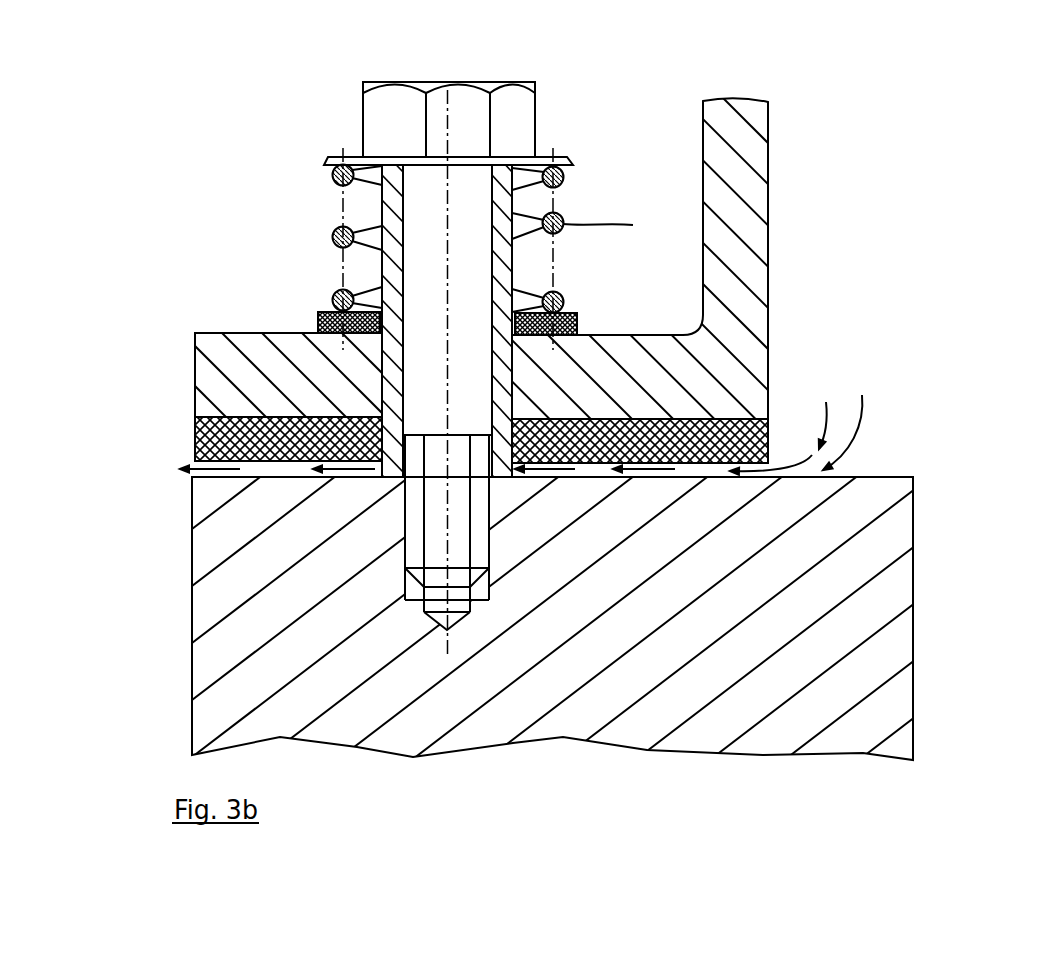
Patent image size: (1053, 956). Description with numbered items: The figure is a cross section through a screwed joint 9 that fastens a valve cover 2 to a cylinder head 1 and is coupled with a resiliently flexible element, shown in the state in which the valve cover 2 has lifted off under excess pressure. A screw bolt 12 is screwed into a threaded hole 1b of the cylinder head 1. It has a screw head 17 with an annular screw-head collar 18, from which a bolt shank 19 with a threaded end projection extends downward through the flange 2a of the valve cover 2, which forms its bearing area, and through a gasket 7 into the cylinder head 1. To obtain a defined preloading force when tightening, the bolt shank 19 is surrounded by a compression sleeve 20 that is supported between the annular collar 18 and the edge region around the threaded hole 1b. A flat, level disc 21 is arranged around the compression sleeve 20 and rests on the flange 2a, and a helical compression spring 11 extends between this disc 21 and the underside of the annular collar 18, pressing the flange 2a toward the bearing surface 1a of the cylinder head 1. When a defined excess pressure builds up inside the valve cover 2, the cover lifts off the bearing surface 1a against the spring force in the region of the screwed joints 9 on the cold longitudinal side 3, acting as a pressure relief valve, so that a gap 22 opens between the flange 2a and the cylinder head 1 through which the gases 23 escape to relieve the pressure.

The cylinder head 1 is at (906, 599).
The bearing surface 1a is at (871, 471).
The threaded hole 1b is at (488, 582).
The valve cover 2 is at (758, 283).
The flange 2a is at (266, 331).
The cold longitudinal side 3 is at (164, 543).
The gasket 7 is at (195, 443).
The screwed joint 9 is at (622, 155).
The helical compression spring 11 is at (337, 245).
The screw bolt 12 is at (543, 140).
The screw head 17 is at (363, 109).
The annular screw-head collar 18 is at (333, 160).
The bolt shank 19 is at (465, 250).
The compression sleeve 20 is at (382, 214).
The disc 21 is at (577, 320).
The gap 22 is at (291, 468).
The gases 23 is at (784, 457).